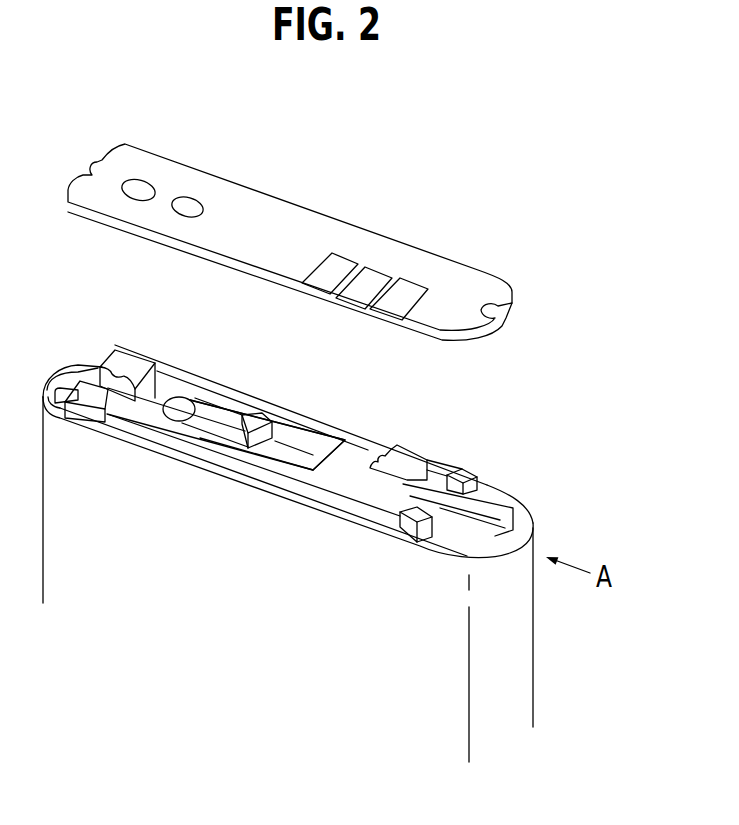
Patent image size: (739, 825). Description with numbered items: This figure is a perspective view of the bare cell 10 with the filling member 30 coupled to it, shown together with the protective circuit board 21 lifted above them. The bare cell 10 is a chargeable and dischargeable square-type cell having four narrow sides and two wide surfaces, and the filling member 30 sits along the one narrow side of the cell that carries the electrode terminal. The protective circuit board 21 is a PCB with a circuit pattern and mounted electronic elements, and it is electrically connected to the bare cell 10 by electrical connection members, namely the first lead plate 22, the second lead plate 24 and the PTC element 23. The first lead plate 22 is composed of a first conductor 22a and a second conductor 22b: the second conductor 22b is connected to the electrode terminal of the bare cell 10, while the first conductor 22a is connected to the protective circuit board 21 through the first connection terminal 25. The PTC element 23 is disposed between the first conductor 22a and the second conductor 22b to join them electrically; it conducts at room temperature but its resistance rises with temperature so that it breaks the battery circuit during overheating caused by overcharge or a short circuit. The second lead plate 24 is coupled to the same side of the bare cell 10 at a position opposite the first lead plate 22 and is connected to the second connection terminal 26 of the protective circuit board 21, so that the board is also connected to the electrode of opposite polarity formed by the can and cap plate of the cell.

The bare cell 10 is at (523, 651).
The protective circuit board 21 is at (283, 214).
The first lead plate 22 is at (173, 519).
The first conductor 22a is at (118, 400).
The second conductor 22b is at (277, 447).
The PTC element 23 is at (182, 399).
The second lead plate 24 is at (423, 504).
The first connection terminal 25 is at (128, 363).
The second connection terminal 26 is at (403, 455).
The filling member 30 is at (312, 493).